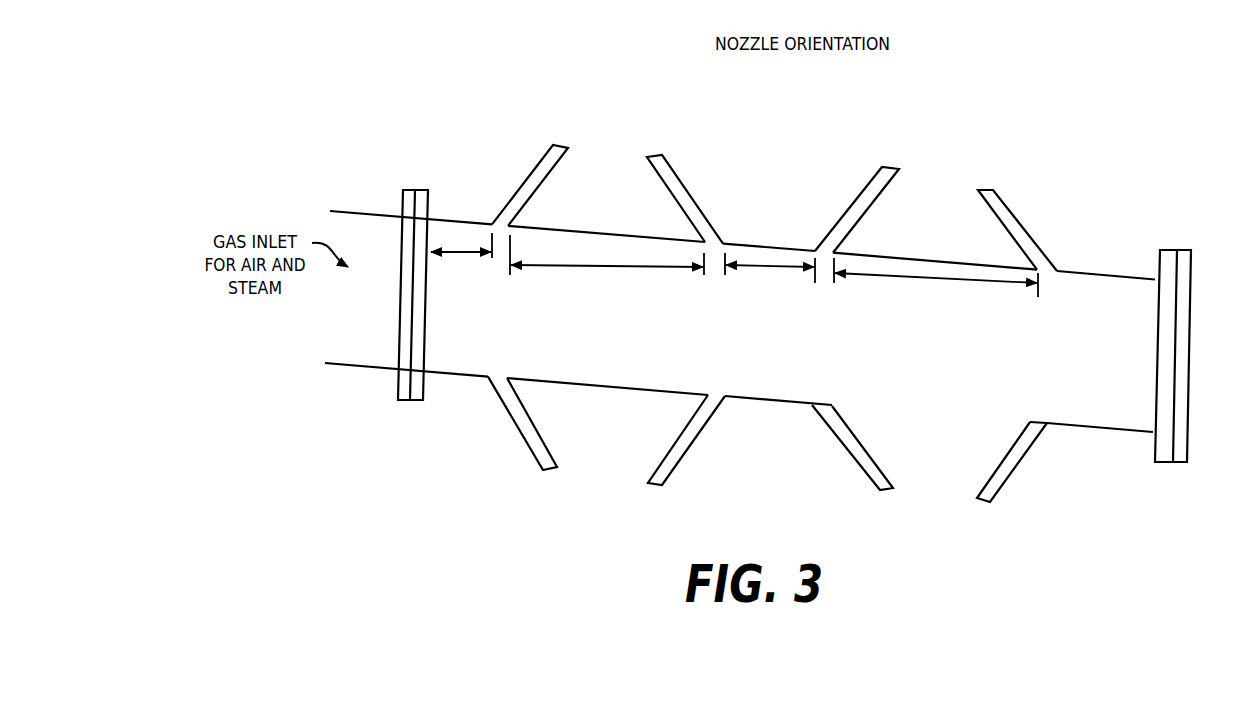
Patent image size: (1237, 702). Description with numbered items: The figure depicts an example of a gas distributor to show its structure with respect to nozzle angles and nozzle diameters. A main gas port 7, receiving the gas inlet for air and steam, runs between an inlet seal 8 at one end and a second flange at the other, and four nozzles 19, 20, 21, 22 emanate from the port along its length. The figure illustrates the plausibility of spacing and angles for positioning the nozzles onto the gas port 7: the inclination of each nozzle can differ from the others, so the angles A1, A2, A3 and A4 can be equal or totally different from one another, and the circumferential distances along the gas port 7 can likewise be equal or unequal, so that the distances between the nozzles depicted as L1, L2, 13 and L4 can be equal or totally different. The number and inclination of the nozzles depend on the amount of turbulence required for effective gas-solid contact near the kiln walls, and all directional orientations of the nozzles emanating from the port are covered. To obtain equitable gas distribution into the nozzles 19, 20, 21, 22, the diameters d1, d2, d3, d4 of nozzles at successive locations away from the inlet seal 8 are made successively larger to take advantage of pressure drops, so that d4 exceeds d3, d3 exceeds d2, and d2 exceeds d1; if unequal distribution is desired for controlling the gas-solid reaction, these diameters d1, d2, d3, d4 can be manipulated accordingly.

The main gas port 7 is at (384, 217).
The inlet seal 8 is at (405, 400).
The nozzle 19 is at (528, 181).
The nozzle 20 is at (700, 210).
The nozzle 21 is at (848, 206).
The nozzle 22 is at (1028, 230).
The distance L3 13 is at (770, 273).
The distance L1 is at (470, 254).
The distance L2 is at (607, 270).
The distance L4 is at (936, 281).
The nozzle diameter d1 is at (553, 145).
The nozzle diameter d2 is at (648, 158).
The nozzle diameter d3 is at (883, 167).
The nozzle diameter d4 is at (978, 190).
The nozzle angle A1 is at (507, 382).
The nozzle angle A2 is at (700, 402).
The nozzle angle A3 is at (835, 410).
The nozzle angle A4 is at (1025, 427).